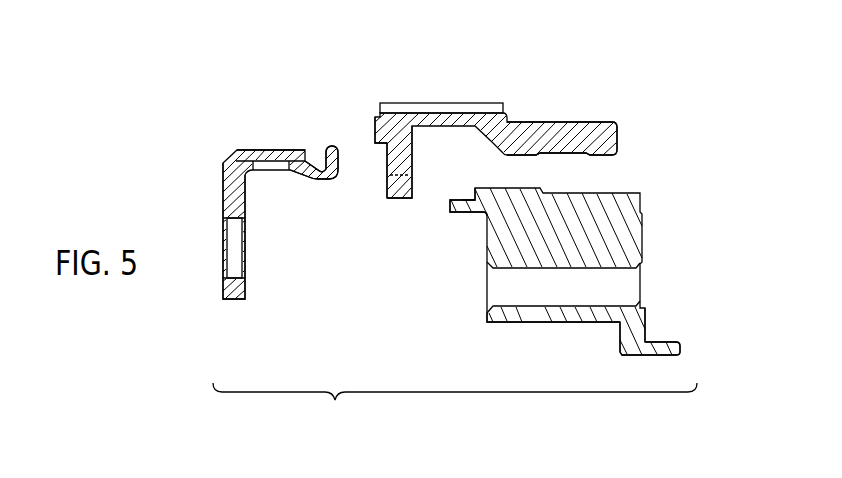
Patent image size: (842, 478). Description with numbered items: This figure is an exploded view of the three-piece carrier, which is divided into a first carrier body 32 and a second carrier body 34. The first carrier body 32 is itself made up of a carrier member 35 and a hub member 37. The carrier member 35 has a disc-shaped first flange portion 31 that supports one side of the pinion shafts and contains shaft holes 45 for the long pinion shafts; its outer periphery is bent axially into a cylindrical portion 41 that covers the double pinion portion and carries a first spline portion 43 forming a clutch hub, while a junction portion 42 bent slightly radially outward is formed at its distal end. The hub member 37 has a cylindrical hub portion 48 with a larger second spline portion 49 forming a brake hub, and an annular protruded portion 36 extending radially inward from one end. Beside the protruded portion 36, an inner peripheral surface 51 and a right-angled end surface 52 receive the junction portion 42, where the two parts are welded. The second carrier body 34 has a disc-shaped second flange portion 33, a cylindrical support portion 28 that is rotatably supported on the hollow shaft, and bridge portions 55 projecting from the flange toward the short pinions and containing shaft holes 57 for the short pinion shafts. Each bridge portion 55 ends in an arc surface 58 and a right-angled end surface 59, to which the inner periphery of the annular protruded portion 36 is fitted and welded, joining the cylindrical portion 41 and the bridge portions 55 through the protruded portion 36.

The cylindrical support portion 28 is at (653, 350).
The first flange portion 31 is at (222, 190).
The first carrier body 32 is at (348, 53).
The second flange portion 33 is at (640, 327).
The second carrier body 34 is at (652, 217).
The carrier member 35 is at (273, 141).
The annular protruded portion 36 is at (399, 200).
The hub member 37 is at (398, 94).
The cylindrical portion 41 is at (298, 172).
The junction portion 42 is at (333, 144).
The first spline portion 43 is at (250, 150).
The shaft holes 45 is at (231, 256).
The cylindrical hub portion 48 is at (530, 122).
The second spline portion 49 is at (444, 105).
The inner peripheral surface 51 is at (375, 138).
The end surface 52 is at (386, 168).
The bridge portions 55 is at (518, 318).
The shaft holes 57 is at (573, 296).
The arc surface 58 is at (447, 198).
The end surface 59 is at (473, 193).